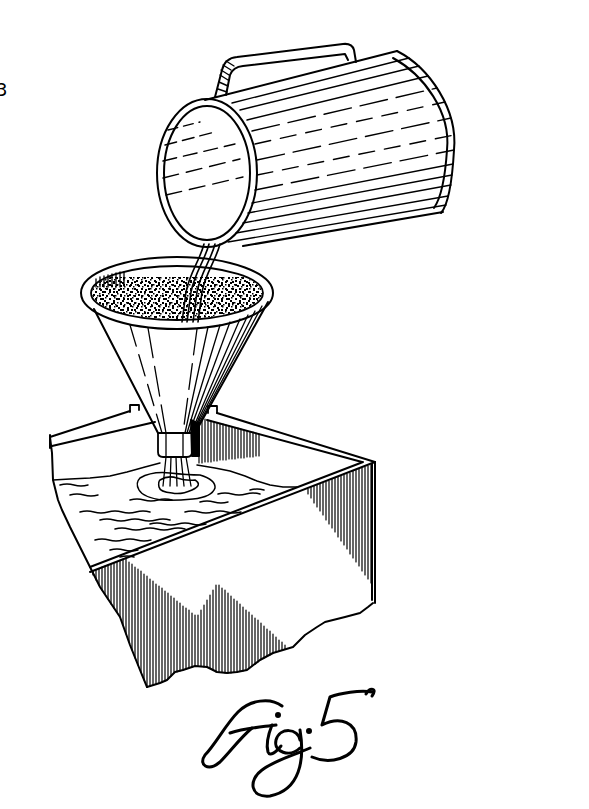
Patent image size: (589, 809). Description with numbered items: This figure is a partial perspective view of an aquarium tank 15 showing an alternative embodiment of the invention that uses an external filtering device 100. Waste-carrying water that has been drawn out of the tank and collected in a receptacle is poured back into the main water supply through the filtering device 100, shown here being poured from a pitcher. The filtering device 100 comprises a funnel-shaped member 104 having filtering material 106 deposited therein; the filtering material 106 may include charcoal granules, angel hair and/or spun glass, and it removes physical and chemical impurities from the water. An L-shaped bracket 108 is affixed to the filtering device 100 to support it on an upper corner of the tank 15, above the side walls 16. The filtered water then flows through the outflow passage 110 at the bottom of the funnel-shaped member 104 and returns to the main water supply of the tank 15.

The external filtering device 100 is at (235, 378).
The funnel-shaped member 104 is at (140, 368).
The filtering material 106 is at (147, 282).
The L-shaped bracket 108 is at (217, 412).
The outflow passage 110 is at (167, 447).
The tank 15 is at (380, 523).
The side walls 16 is at (367, 558).